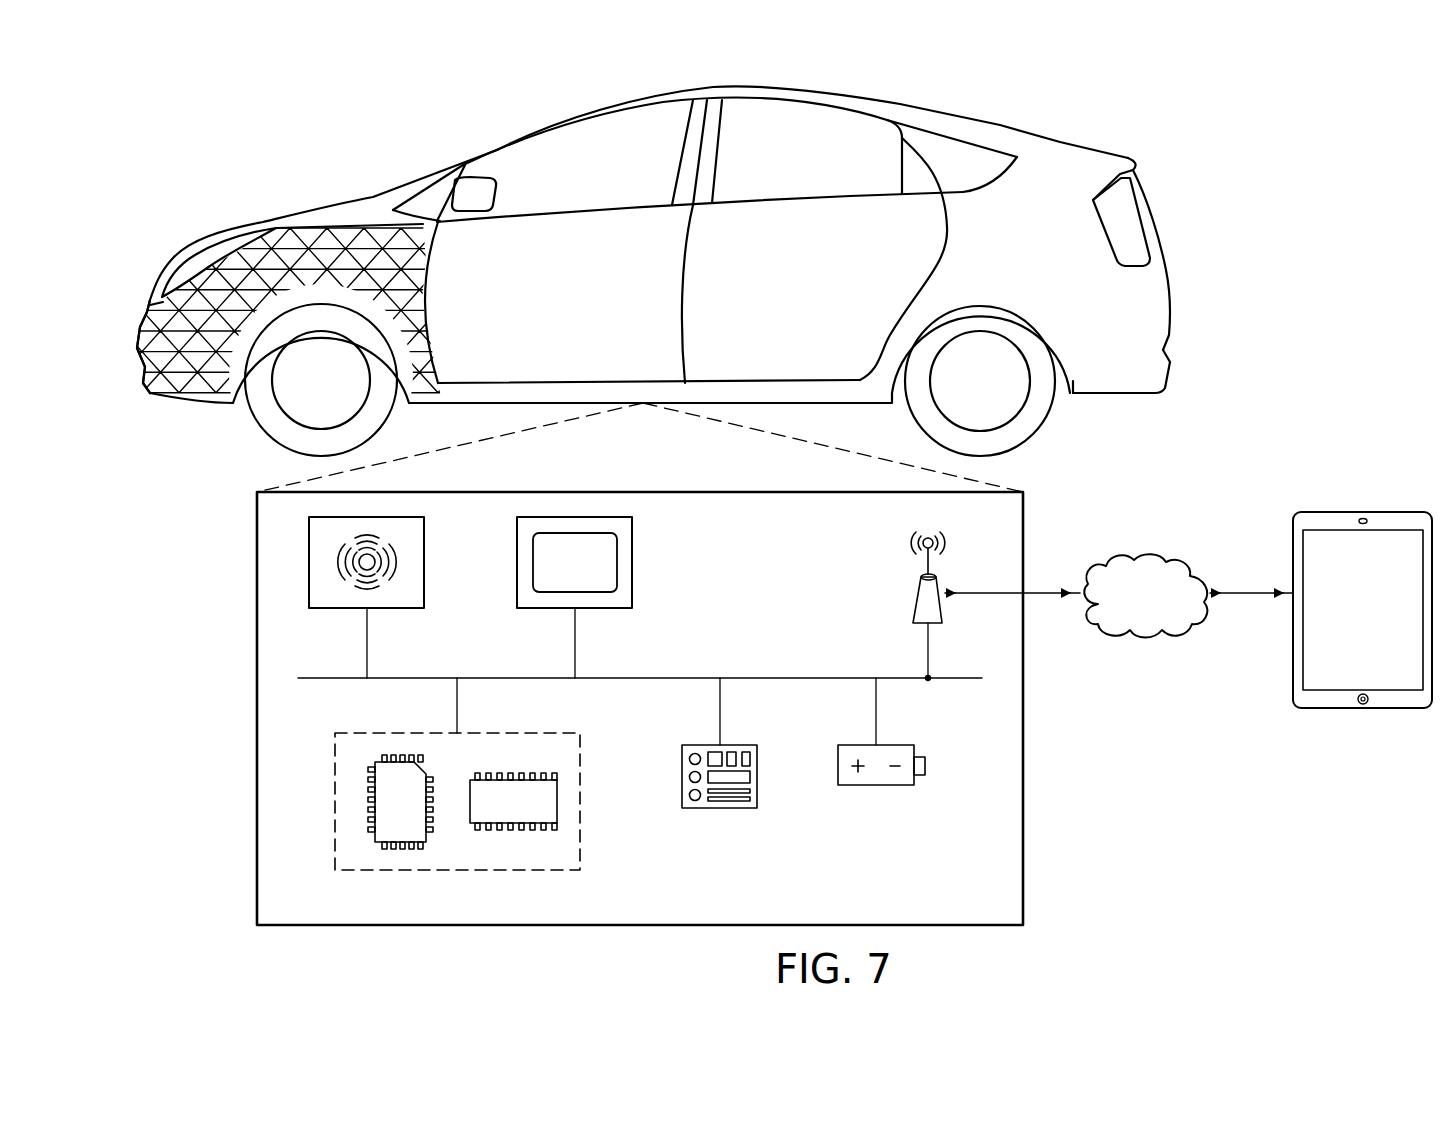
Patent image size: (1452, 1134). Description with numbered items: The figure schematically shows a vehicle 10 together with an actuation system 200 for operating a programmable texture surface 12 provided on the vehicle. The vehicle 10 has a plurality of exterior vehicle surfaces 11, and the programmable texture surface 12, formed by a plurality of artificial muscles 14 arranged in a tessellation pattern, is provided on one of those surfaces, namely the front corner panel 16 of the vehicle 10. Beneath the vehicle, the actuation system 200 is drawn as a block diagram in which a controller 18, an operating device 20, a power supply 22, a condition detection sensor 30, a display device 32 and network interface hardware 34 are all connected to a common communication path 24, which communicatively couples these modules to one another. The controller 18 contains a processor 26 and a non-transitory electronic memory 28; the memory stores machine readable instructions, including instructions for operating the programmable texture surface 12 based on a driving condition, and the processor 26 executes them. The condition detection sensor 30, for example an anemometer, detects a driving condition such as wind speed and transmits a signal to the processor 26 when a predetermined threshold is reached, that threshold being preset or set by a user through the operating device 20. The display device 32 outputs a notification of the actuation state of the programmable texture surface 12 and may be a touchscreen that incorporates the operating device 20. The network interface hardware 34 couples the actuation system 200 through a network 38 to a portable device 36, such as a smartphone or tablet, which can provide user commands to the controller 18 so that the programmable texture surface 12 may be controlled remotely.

The vehicle 10 is at (619, 289).
The exterior vehicle surfaces 11 is at (1080, 168).
The programmable texture surface 12 is at (176, 422).
The artificial muscle 14 is at (150, 313).
The front corner panel 16 is at (307, 227).
The controller 18 is at (458, 773).
The operating device 20 is at (720, 808).
The power supply 22 is at (876, 785).
The communication path 24 is at (304, 678).
The processor 26 is at (375, 800).
The non-transitory electronic memory 28 is at (557, 802).
The condition detection sensor 30 is at (424, 562).
The display device 32 is at (632, 562).
The network interface hardware 34 is at (943, 613).
The portable device 36 is at (1365, 512).
The network 38 is at (1156, 555).
The actuation system 200 is at (844, 691).